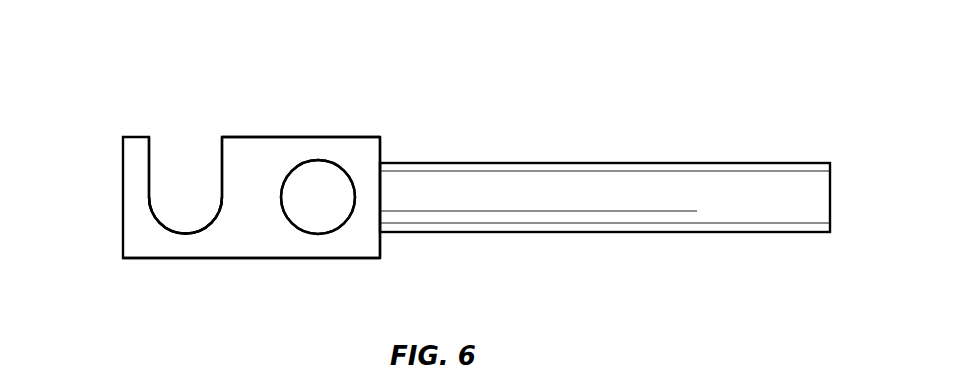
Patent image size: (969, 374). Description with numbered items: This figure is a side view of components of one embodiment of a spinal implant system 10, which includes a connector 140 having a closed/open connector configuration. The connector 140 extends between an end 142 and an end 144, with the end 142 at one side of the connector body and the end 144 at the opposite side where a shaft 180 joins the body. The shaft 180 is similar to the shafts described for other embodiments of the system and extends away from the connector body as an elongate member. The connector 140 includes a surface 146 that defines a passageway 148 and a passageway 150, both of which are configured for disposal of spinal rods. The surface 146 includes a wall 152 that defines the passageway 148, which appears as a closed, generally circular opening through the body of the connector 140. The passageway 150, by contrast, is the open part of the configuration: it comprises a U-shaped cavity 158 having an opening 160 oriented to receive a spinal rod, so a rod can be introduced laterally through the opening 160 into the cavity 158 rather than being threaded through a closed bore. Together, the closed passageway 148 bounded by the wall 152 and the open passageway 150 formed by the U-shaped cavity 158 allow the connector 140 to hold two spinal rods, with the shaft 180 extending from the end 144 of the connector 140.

The spinal implant system 10 is at (860, 119).
The connector 140 is at (367, 137).
The end 142 is at (122, 232).
The end 144 is at (382, 150).
The surface 146 is at (283, 137).
The passageway 148 is at (317, 183).
The passageway 150 is at (197, 197).
The wall 152 is at (340, 220).
The U-shaped cavity 158 is at (165, 140).
The opening 160 is at (192, 165).
The shaft 180 is at (628, 183).